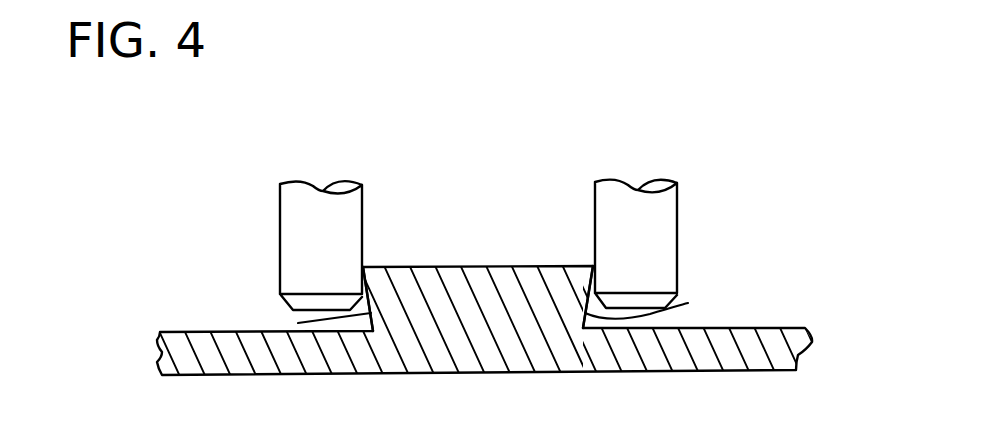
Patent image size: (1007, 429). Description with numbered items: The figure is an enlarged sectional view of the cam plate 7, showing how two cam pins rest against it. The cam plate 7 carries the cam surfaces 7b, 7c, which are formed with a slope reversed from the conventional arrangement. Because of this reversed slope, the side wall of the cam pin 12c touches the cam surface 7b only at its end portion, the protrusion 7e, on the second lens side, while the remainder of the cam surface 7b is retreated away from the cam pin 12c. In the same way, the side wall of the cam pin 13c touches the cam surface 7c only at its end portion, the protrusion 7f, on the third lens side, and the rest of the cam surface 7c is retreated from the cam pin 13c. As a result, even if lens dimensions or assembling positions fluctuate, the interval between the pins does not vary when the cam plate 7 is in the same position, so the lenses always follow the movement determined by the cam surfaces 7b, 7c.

The cam plate 7 is at (421, 266).
The cam surface 7b is at (298, 323).
The cam surface 7c is at (688, 303).
The protrusion 7e is at (364, 267).
The protrusion 7f is at (593, 266).
The cam pin 12c is at (280, 217).
The cam pin 13c is at (677, 218).